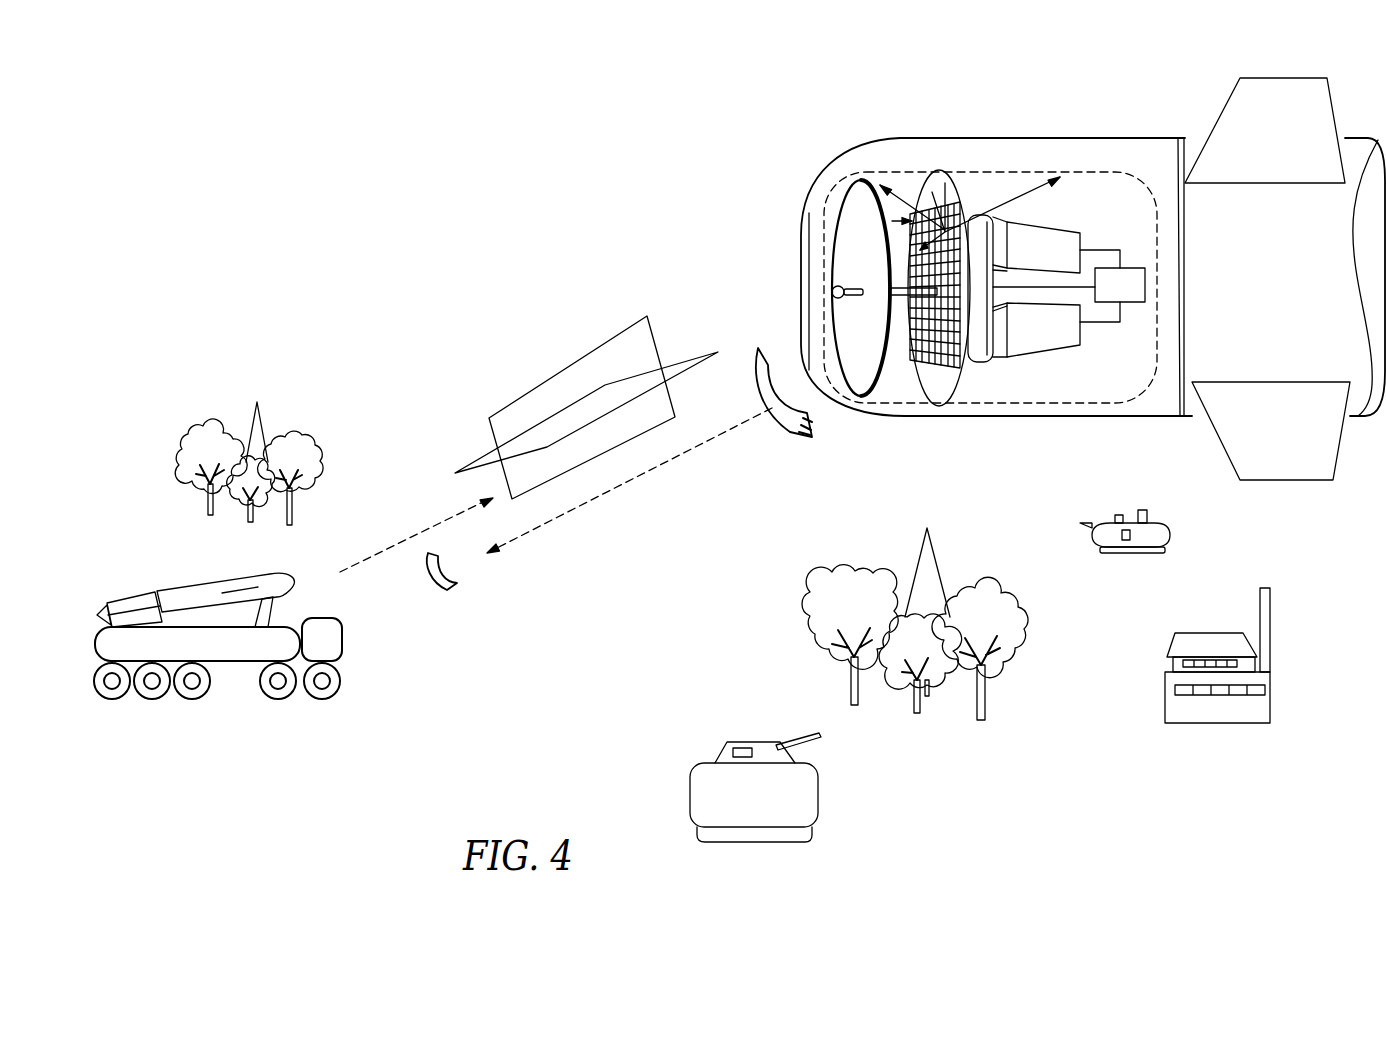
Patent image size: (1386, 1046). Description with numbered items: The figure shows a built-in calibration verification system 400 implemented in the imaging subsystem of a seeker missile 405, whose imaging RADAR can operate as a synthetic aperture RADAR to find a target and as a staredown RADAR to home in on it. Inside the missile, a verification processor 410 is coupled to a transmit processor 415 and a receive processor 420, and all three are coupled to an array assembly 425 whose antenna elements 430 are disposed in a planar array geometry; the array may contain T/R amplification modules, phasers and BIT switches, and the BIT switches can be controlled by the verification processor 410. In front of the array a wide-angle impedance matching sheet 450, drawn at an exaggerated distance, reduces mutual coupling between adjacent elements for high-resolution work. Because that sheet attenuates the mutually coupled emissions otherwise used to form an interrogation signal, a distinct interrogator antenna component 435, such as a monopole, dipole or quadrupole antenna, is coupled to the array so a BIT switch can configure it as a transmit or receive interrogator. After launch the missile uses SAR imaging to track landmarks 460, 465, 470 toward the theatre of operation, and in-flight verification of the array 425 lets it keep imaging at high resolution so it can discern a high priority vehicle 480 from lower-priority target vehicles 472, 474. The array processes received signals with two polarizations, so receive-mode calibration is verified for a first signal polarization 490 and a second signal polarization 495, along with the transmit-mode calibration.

The calibration verification system 400 is at (985, 403).
The seeker missile 405 is at (1122, 138).
The verification processor 410 is at (1145, 285).
The transmit processor 415 is at (1062, 226).
The receive processor 420 is at (1078, 348).
The array assembly 425 is at (980, 362).
The antenna elements 430 is at (920, 207).
The interrogator antenna component 435 is at (854, 298).
The wide-angle impedance matching sheet 450 is at (850, 195).
The landmark 460 is at (1270, 705).
The landmark 465 is at (1023, 597).
The landmark 470 is at (265, 408).
The lower-priority target vehicle 472 is at (1170, 533).
The lower-priority target vehicle 474 is at (818, 797).
The high priority vehicle 480 is at (205, 585).
The first signal polarization 490 is at (687, 350).
The second signal polarization 495 is at (572, 356).